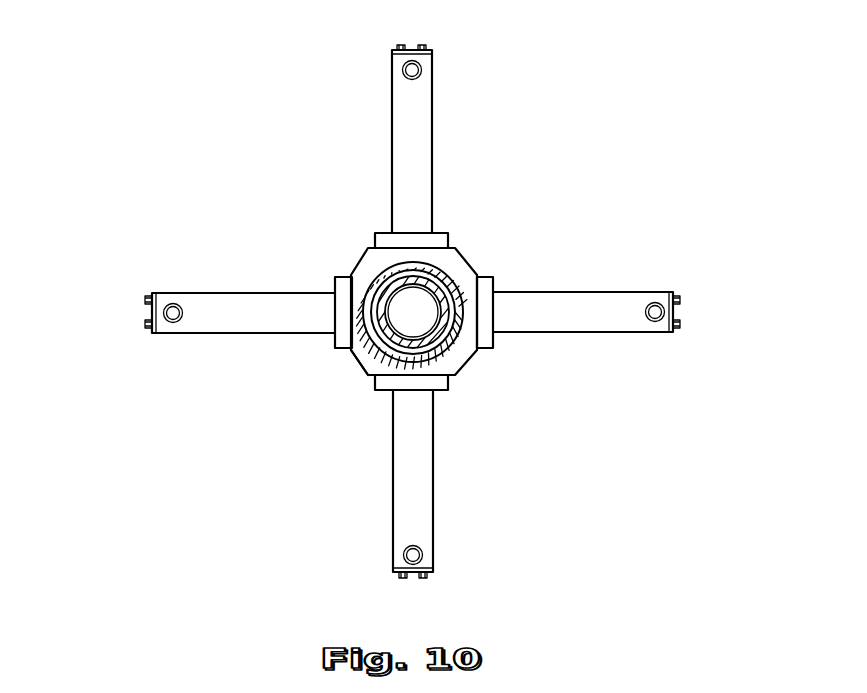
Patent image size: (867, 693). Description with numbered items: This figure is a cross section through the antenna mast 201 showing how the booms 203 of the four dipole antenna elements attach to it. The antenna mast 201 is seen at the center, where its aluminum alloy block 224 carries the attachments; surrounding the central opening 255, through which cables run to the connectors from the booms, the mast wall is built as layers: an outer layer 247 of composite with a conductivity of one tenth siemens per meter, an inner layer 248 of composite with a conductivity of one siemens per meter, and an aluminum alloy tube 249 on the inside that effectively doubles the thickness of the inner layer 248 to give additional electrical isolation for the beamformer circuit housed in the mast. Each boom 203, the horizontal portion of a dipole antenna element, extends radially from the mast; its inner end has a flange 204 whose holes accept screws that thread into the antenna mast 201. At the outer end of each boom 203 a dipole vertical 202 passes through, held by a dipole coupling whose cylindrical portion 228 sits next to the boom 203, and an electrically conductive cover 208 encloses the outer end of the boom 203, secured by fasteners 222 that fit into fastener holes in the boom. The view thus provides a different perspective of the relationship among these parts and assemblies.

The antenna mast 201 is at (485, 313).
The dipole vertical 202 is at (420, 70).
The boom 203 is at (432, 158).
The flange 204 is at (340, 277).
The cover 208 is at (408, 47).
The fastener 222 is at (423, 46).
The aluminum alloy block 224 is at (373, 368).
The cylindrical portion 228 is at (402, 70).
The outer layer 247 is at (445, 270).
The inner layer 248 is at (445, 287).
The aluminum alloy tube 249 is at (366, 361).
The central opening 255 is at (463, 318).